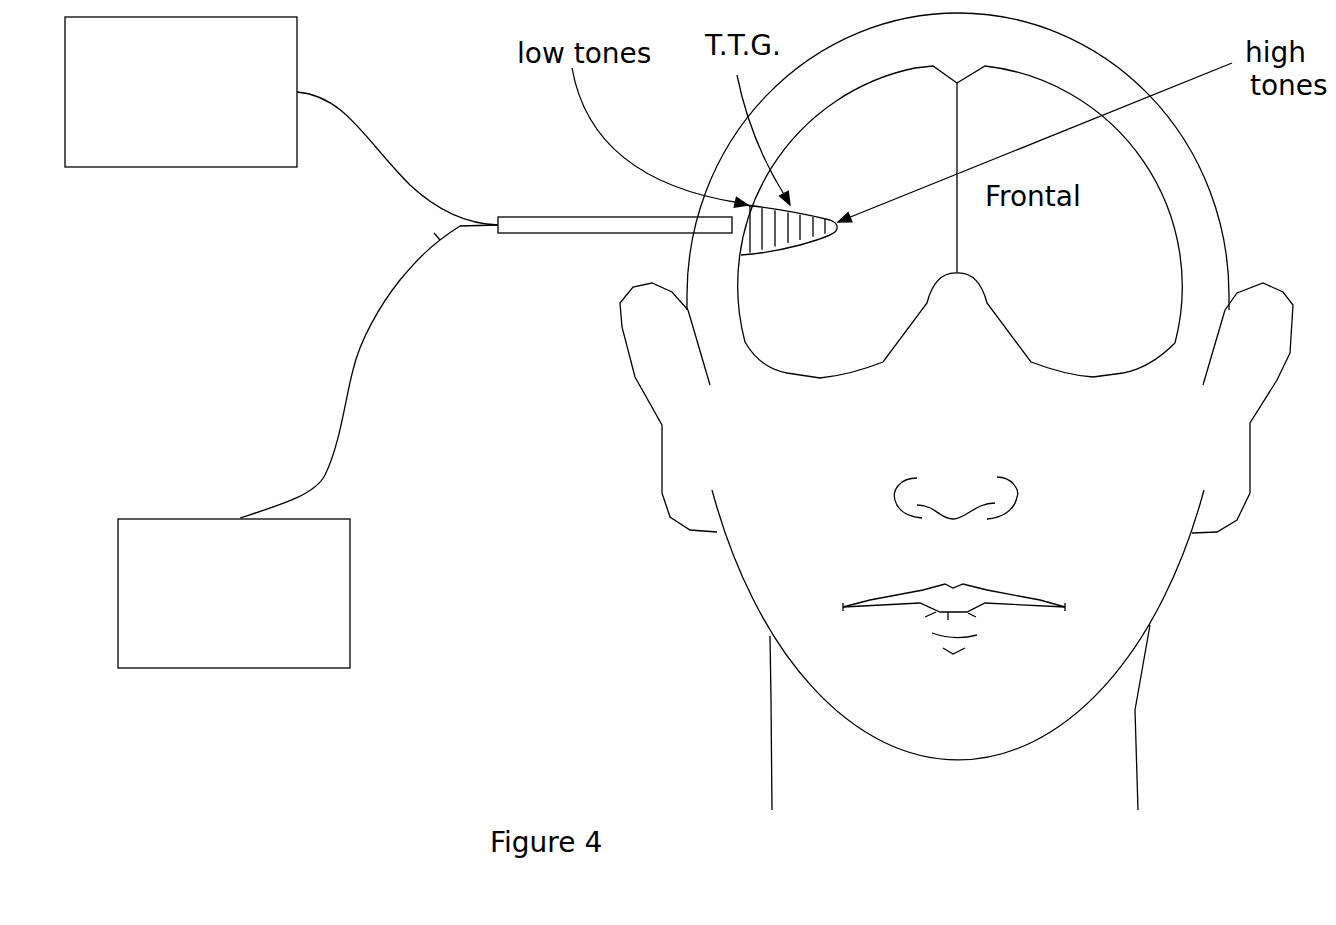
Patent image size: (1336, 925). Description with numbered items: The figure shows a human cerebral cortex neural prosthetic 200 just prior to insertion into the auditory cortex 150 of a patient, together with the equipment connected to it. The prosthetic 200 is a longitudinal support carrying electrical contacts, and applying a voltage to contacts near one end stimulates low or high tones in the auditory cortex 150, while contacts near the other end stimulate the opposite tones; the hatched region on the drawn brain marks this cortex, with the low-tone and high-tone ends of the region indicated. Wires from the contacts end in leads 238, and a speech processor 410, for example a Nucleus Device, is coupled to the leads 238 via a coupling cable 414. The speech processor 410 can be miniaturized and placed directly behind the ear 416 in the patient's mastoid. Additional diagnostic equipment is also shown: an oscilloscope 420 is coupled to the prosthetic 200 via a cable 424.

The oscilloscope 420 is at (297, 43).
The cable 424 is at (373, 148).
The speech processor 410 is at (350, 594).
The coupling cable 414 is at (352, 387).
The leads 238 is at (435, 258).
The human cerebral cortex neural prosthetic 200 is at (494, 250).
The ear 416 is at (662, 443).
The auditory cortex 150 is at (770, 197).